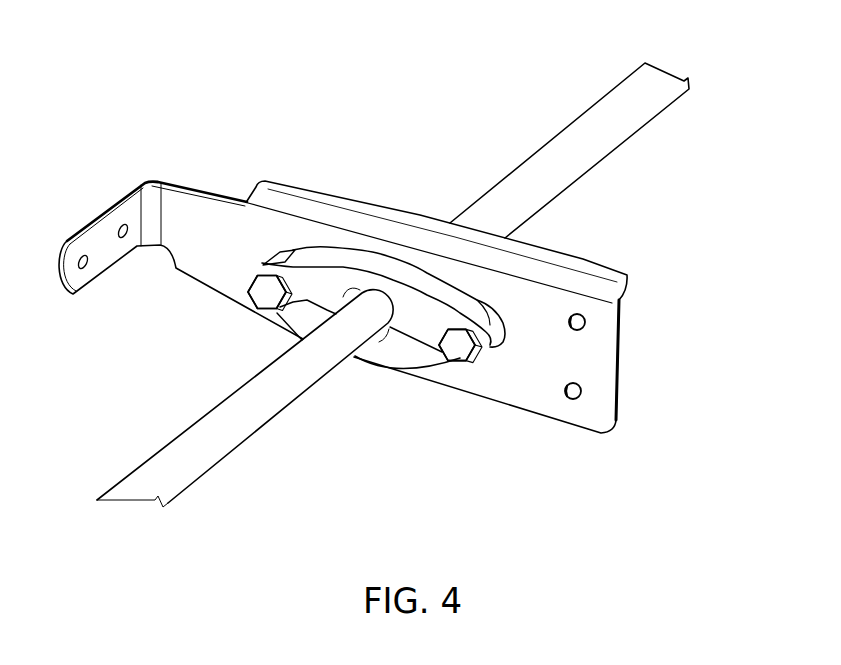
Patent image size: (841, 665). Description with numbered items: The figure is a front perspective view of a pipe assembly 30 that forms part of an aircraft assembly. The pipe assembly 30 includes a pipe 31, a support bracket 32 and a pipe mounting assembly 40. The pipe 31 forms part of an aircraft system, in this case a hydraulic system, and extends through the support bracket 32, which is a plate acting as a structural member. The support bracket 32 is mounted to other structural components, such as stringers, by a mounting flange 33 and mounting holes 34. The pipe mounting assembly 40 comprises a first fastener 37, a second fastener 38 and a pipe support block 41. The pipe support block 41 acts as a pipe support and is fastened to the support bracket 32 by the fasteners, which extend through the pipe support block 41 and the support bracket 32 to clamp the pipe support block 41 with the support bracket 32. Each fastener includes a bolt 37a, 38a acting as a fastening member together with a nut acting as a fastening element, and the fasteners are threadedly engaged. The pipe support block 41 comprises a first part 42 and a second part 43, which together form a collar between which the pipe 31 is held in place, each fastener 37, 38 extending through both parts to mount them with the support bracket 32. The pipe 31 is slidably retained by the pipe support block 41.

The pipe assembly 30 is at (427, 70).
The pipe 31 is at (598, 129).
The support bracket 32 is at (503, 397).
The mounting flange 33 is at (107, 235).
The mounting holes 34 is at (586, 321).
The first fastener 37 is at (267, 266).
The bolt 37a is at (257, 292).
The second fastener 38 is at (453, 352).
The bolt 38a is at (462, 348).
The pipe mounting assembly 40 is at (201, 344).
The pipe support block 41 is at (403, 358).
The first part 42 is at (334, 277).
The second part 43 is at (368, 355).